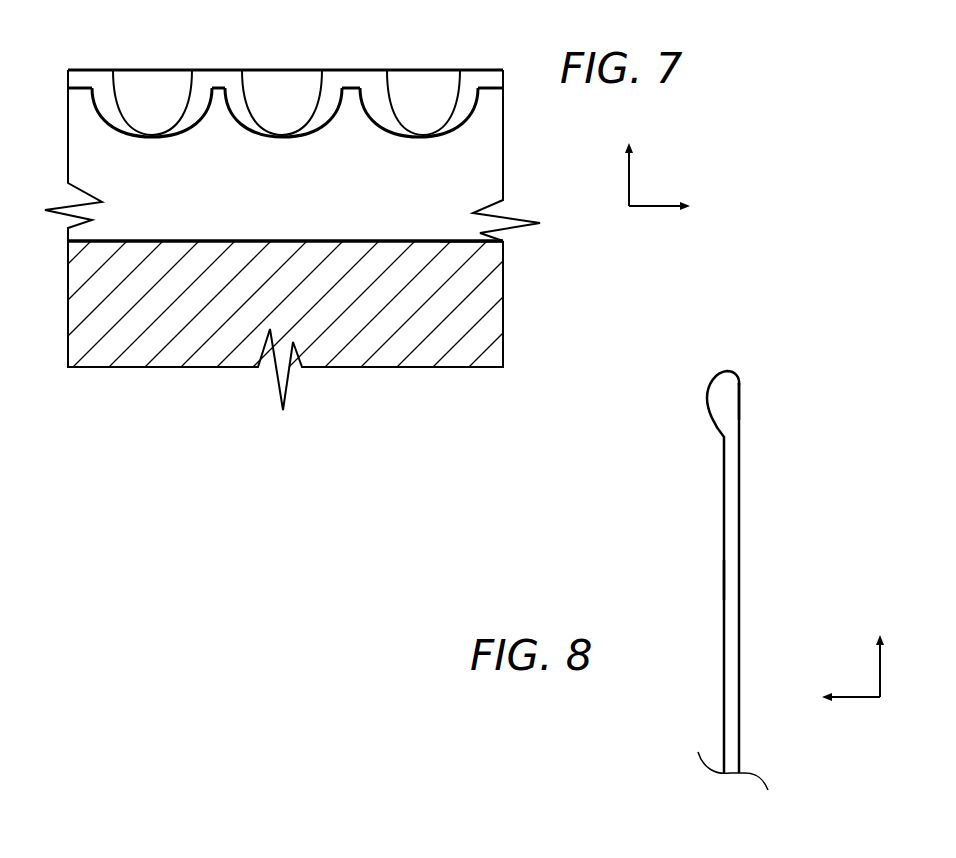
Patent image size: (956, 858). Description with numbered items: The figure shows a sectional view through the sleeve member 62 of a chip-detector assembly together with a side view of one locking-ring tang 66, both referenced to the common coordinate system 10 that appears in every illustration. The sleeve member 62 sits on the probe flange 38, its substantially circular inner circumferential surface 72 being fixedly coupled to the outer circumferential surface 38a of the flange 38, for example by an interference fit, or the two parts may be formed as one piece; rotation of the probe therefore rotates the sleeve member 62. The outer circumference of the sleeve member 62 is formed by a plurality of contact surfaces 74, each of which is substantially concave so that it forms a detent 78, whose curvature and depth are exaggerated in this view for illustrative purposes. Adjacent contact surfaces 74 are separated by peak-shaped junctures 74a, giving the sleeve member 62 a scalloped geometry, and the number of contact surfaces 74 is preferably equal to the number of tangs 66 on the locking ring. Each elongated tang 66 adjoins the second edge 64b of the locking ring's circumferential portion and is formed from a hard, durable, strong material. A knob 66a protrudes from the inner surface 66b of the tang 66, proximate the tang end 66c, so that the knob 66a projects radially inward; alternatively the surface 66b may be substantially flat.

In FIG. 7, the coordinate system 10 is at (643, 207).
In FIG. 8, the coordinate system 10 is at (845, 700).
In FIG. 7, the flange 38 is at (375, 328).
In FIG. 7, the outer circumferential surface 38a is at (460, 245).
In FIG. 7, the sleeve member 62 is at (309, 191).
In FIG. 7, the second edge 64b is at (213, 70).
In FIG. 8, the tang 66 is at (732, 340).
In FIG. 7, the knob 66a is at (172, 103).
In FIG. 8, the knob 66a is at (706, 400).
In FIG. 8, the inner surface 66b is at (724, 575).
In FIG. 8, the end 66c is at (749, 381).
In FIG. 7, the inner circumferential surface 72 is at (172, 241).
In FIG. 7, the contact surface 74 is at (469, 97).
In FIG. 7, the peak-shaped juncture 74a is at (221, 92).
In FIG. 7, the detent 78 is at (373, 92).